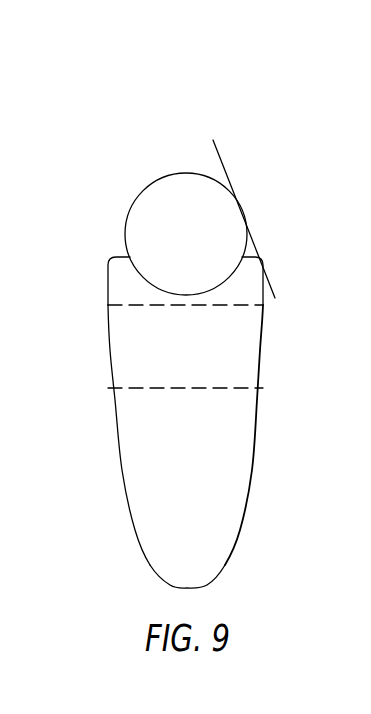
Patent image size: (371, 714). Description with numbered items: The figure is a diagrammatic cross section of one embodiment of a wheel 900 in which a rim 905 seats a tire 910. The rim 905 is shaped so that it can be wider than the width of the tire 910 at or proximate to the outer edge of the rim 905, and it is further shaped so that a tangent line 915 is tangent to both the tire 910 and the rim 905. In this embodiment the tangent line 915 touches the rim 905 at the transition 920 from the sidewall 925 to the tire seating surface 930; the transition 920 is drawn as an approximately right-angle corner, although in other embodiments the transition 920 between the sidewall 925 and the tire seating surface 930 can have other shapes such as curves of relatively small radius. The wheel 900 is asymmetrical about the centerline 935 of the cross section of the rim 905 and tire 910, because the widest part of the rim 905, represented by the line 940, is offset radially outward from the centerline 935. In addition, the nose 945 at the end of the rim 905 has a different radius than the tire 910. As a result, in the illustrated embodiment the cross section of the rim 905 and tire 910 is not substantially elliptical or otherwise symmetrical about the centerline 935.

The wheel 900 is at (172, 130).
The rim 905 is at (118, 348).
The tire 910 is at (147, 192).
The tangent line 915 is at (228, 178).
The transition 920 is at (267, 263).
The sidewall 925 is at (113, 448).
The tire seating surface 930 is at (120, 253).
The centerline 935 is at (197, 390).
The line representing widest part of rim 940 is at (197, 310).
The nose 945 is at (157, 563).